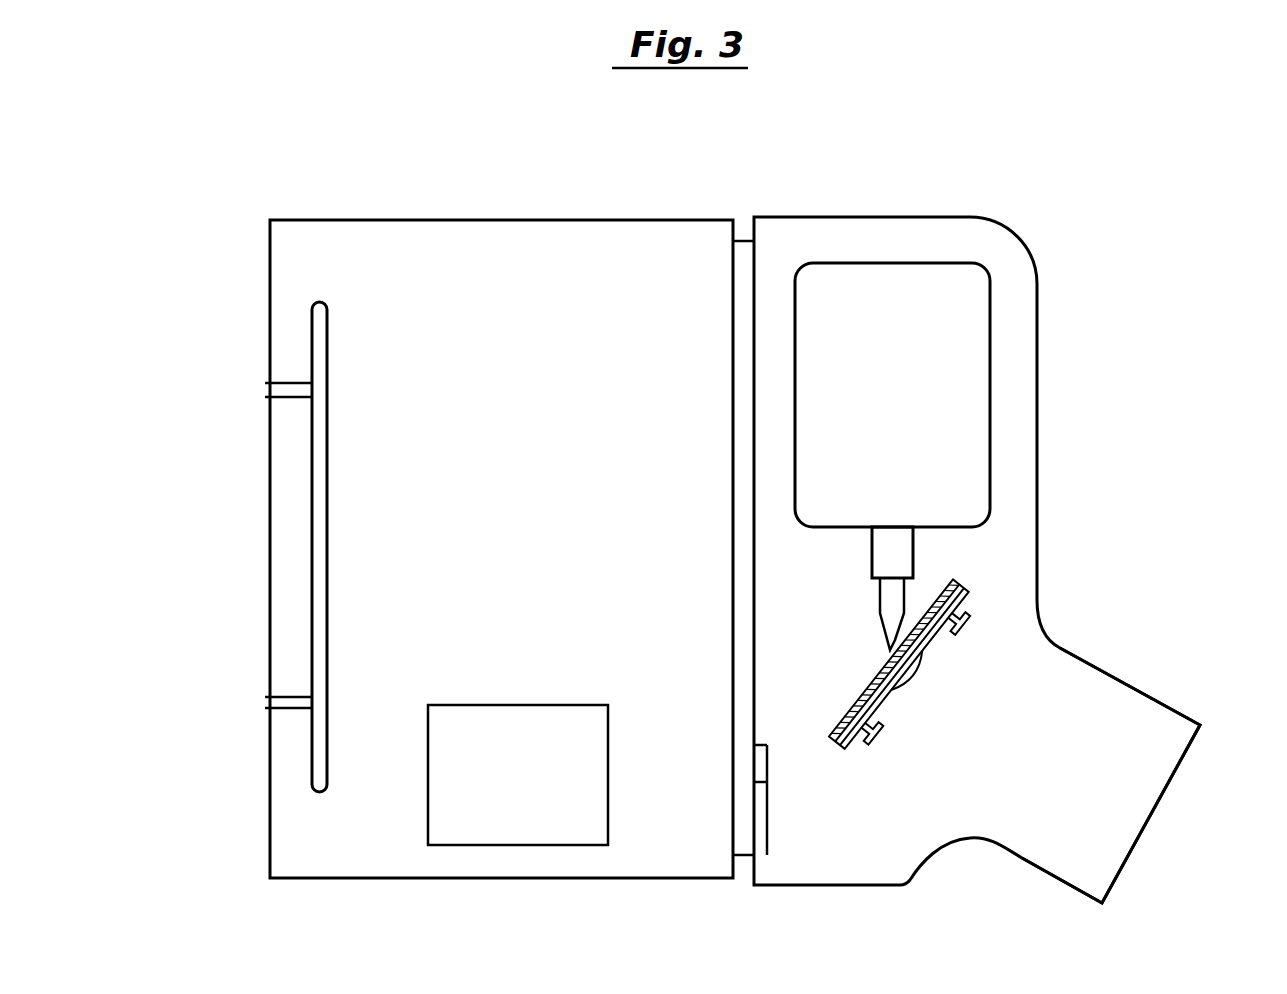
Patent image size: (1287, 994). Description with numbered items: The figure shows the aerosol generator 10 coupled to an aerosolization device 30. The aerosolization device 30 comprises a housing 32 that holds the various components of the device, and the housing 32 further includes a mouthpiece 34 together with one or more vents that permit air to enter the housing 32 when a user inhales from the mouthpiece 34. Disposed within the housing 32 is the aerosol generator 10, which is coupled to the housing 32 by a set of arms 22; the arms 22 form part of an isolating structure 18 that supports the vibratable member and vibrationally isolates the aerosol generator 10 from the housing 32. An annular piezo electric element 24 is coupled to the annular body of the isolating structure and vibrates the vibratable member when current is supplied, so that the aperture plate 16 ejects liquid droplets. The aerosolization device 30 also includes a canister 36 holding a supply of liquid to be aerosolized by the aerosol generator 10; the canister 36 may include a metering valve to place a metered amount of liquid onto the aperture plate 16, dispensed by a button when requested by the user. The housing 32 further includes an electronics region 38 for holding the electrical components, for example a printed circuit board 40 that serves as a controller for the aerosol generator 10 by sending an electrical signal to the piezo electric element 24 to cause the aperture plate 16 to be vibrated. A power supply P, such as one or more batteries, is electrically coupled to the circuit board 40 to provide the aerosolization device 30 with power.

The aerosol generator 10 is at (948, 691).
The aperture plate 16 is at (910, 678).
The isolating structure 18 is at (880, 713).
The arms 22 is at (962, 626).
The piezo electric element 24 is at (847, 701).
The aerosolization device 30 is at (920, 184).
The housing 32 is at (1040, 452).
The mouthpiece 34 is at (1150, 824).
The canister 36 is at (915, 413).
The electronics region 38 is at (268, 756).
The printed circuit board 40 is at (327, 362).